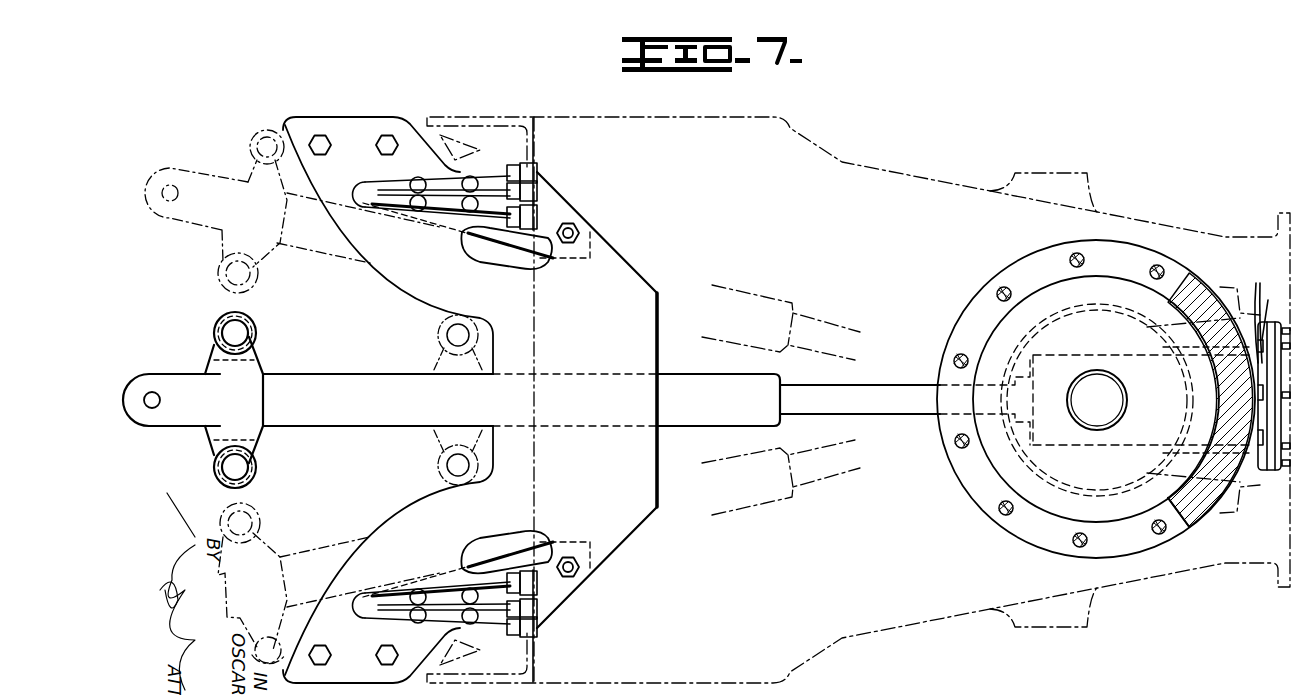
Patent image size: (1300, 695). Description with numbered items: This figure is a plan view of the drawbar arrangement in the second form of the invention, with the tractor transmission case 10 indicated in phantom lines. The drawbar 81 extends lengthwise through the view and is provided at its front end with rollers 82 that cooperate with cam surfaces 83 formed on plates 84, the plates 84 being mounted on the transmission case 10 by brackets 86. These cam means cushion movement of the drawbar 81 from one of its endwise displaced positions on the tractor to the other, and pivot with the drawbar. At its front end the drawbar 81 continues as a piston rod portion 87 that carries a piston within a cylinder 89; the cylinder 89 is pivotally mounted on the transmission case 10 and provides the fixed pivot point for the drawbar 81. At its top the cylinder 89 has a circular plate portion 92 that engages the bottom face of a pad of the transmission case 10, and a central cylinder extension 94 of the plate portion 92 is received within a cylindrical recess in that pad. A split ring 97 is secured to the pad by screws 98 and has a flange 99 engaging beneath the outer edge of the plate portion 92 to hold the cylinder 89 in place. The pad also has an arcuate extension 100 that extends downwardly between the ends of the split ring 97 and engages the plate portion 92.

The transmission case 10 is at (841, 163).
The drawbar 81 is at (702, 380).
The rollers 82 is at (248, 327).
The cam surfaces 83 is at (410, 292).
The plates 84 is at (525, 267).
The brackets 86 is at (438, 190).
The piston rod portion 87 is at (851, 394).
The cylinder 89 is at (1255, 290).
The circular plate portion 92 is at (1048, 298).
The central cylinder extension 94 is at (1108, 410).
The split ring 97 is at (967, 318).
The screws 98 is at (1150, 270).
The flange 99 is at (1158, 488).
The arcuate extension 100 is at (1205, 492).